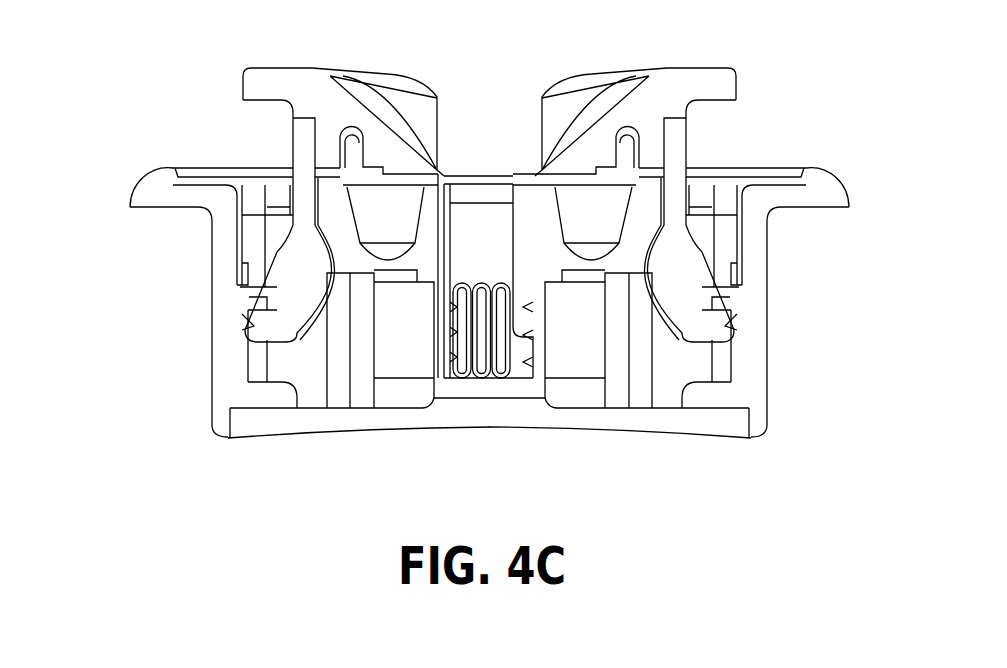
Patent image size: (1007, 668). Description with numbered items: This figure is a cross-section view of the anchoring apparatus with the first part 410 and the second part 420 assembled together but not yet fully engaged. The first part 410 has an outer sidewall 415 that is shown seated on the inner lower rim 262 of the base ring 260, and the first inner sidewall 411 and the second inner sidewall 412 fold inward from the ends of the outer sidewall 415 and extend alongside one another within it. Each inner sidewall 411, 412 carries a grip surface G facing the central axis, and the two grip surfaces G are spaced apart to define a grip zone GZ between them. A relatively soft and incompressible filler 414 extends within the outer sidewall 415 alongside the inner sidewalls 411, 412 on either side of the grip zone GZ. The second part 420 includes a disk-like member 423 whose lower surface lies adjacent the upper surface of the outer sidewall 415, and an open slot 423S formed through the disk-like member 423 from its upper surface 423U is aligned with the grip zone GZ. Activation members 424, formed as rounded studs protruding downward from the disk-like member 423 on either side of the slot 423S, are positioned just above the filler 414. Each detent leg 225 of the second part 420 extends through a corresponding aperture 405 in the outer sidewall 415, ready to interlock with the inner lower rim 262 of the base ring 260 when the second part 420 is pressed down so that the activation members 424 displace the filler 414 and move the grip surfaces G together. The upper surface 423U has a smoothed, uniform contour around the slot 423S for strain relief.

The base ring 260 is at (92, 180).
The second part 420 is at (531, 177).
The disk-like member 423 is at (734, 125).
The open slot 423S is at (463, 122).
The upper surface 423U is at (606, 80).
The detent leg 225 is at (226, 328).
The aperture 405 is at (255, 348).
The inner lower rim 262 is at (250, 396).
The first part 410 is at (252, 432).
The outer sidewall 415 is at (315, 416).
The filler 414 is at (426, 343).
The activation member 424 is at (372, 241).
The first inner sidewall 411 is at (438, 396).
The second inner sidewall 412 is at (543, 396).
The grip surface G is at (515, 283).
The grip zone GZ is at (470, 395).